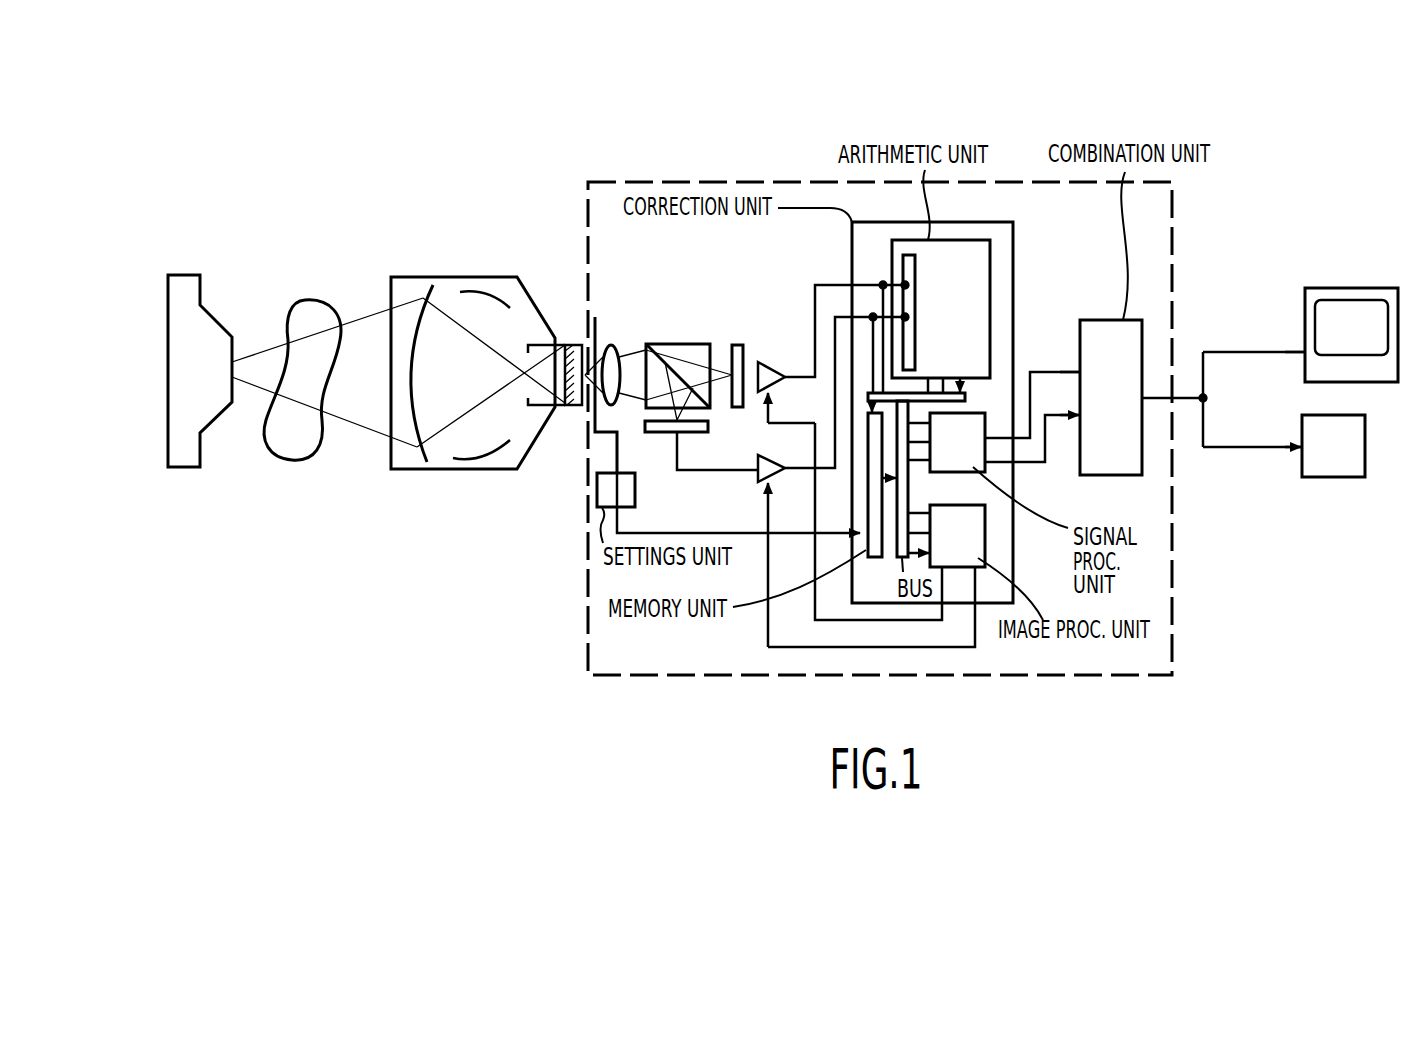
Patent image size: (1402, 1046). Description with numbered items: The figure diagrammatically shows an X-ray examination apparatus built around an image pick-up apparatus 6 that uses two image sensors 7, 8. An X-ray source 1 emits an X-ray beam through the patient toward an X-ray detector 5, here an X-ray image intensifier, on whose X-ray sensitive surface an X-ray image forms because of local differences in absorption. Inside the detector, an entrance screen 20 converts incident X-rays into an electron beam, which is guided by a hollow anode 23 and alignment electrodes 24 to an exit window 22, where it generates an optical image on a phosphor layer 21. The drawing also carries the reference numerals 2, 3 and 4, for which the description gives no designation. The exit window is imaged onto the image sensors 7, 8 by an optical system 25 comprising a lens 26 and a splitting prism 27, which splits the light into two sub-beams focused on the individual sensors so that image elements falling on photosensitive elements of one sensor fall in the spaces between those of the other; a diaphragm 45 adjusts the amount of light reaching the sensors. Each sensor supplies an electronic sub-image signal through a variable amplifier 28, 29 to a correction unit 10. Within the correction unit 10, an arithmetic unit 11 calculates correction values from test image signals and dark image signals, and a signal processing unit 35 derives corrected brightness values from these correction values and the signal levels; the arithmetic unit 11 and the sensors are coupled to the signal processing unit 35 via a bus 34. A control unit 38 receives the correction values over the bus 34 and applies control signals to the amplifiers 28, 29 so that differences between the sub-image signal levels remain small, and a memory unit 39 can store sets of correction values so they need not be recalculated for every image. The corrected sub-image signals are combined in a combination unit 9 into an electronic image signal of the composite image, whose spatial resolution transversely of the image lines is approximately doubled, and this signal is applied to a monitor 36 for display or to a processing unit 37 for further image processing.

The X-ray source 1 is at (306, 175).
The light source 2 is at (186, 273).
The lens 3 is at (310, 298).
The light beam 4 is at (258, 352).
The X-ray detector 5 is at (505, 277).
The entrance screen 20 is at (403, 372).
The alignment electrodes 24 is at (492, 304).
The hollow anode 23 is at (530, 407).
The phosphor layer 21 is at (567, 408).
The exit window 22 is at (580, 343).
The diaphragm 45 is at (598, 320).
The lens 26 is at (612, 343).
The optical system 25 is at (650, 277).
The splitting prism 27 is at (694, 342).
The image sensor 7 is at (738, 344).
The image sensor 8 is at (652, 433).
The variable amplifier 28 is at (767, 362).
The variable amplifier 29 is at (757, 477).
The correction unit 10 is at (1015, 238).
The arithmetic unit 11 is at (990, 283).
The bus 34 is at (967, 397).
The memory unit 39 is at (875, 558).
The signal processing unit 35 is at (988, 443).
The control unit 38 is at (988, 541).
The combination unit 9 is at (1112, 320).
The monitor 36 is at (1352, 288).
The processing unit 37 is at (1341, 478).
The image pick-up apparatus 6 is at (1175, 244).